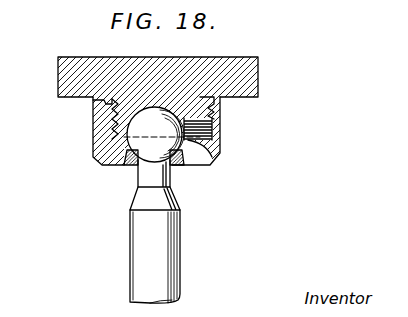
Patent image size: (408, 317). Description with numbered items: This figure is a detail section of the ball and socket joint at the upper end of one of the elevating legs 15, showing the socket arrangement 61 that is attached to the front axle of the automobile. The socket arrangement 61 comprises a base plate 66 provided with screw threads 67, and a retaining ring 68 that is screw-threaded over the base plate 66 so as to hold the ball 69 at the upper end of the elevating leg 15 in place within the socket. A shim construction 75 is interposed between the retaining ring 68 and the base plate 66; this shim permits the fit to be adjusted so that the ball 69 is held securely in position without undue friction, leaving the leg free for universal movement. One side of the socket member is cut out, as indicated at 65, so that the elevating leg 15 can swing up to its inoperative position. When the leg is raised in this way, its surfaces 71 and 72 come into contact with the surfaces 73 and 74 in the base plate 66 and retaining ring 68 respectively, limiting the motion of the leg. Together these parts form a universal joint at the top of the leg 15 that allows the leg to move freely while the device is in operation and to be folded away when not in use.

The socket arrangement 61 is at (73, 100).
The base plate 66 is at (257, 77).
The retaining ring 68 is at (102, 165).
The shim construction 75 is at (94, 103).
The screw threads 67 is at (109, 133).
The surface 74 is at (212, 120).
The cut out 65 is at (214, 132).
The surface 73 is at (213, 154).
The ball 69 is at (133, 167).
The surface 71 is at (172, 178).
The surface 72 is at (174, 199).
The elevating leg 15 is at (178, 237).